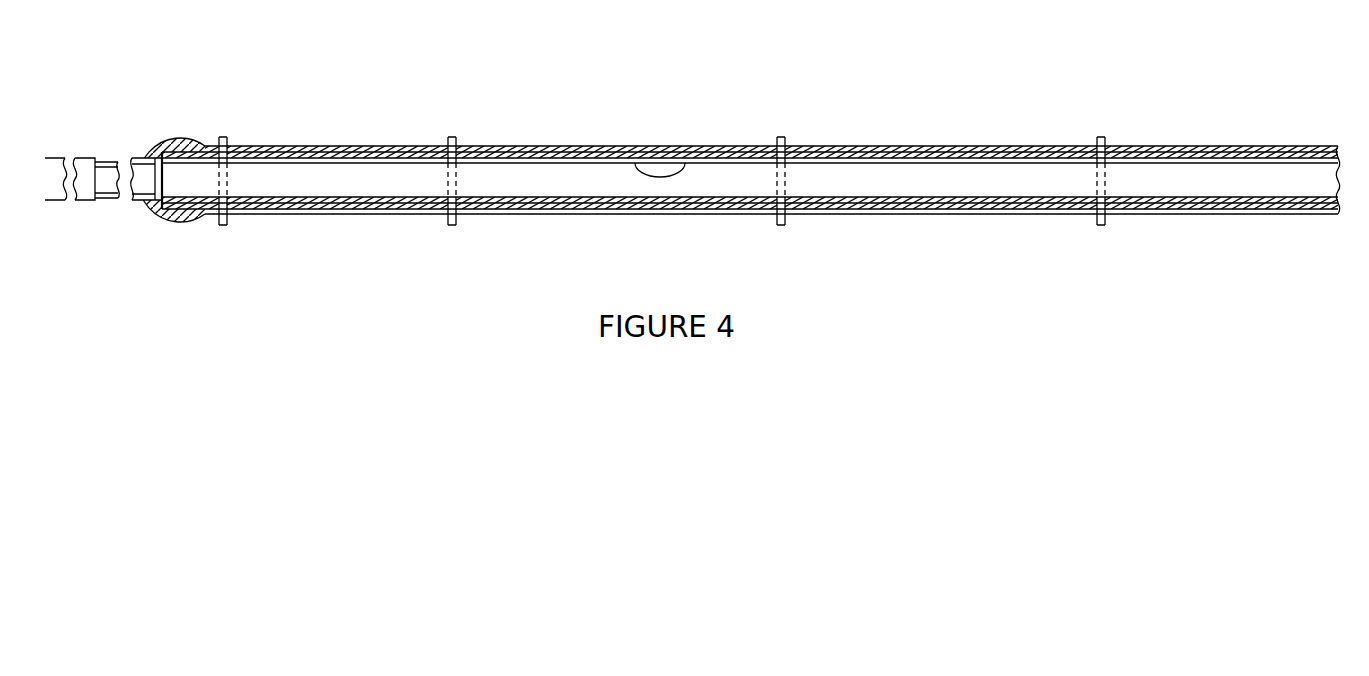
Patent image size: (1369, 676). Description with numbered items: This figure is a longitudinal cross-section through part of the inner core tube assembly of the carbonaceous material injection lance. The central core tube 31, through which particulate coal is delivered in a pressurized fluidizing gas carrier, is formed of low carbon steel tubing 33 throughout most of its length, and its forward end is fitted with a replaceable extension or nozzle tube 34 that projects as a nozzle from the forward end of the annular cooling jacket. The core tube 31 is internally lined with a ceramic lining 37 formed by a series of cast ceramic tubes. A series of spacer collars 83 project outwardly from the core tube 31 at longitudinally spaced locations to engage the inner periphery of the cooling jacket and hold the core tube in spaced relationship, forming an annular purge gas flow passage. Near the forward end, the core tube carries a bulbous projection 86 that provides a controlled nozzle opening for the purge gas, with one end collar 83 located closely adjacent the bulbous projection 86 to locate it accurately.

The central core tube 31 is at (735, 134).
The low carbon steel tubing 33 is at (883, 147).
The replaceable extension or nozzle tube 34 is at (83, 163).
The ceramic lining 37 is at (687, 160).
The spacer collars 83 is at (552, 140).
The bulbous projection 86 is at (172, 137).